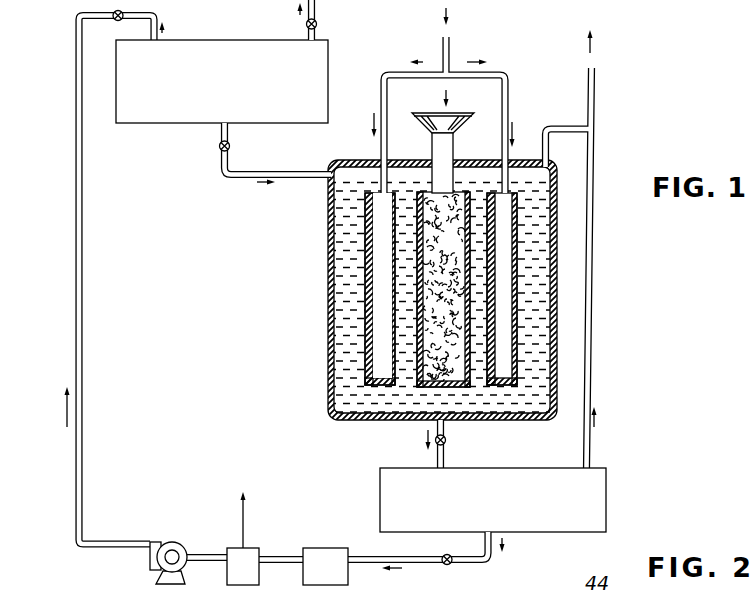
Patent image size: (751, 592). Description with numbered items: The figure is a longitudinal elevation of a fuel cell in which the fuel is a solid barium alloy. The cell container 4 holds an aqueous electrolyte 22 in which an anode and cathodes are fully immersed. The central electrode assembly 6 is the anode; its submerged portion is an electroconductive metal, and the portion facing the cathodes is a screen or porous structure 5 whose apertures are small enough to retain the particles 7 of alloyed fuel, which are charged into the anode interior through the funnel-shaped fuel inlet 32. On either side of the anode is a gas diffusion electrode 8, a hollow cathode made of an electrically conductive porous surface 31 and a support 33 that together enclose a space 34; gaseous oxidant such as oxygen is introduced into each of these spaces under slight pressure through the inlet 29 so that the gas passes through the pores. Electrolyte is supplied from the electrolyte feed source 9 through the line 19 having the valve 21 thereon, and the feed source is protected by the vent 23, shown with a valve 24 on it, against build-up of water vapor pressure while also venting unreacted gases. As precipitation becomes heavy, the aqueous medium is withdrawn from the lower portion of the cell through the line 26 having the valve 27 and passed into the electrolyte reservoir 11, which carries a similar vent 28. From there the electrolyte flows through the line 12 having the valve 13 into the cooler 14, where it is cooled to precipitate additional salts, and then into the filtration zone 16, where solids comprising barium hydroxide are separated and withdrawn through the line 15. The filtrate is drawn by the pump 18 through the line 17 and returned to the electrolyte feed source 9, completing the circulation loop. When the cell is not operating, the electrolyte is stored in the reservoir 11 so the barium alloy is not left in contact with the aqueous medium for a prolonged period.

The cell container 4 is at (322, 275).
The perforated or porous structure 5 is at (407, 228).
The electrode assembly 6 is at (455, 388).
The particles 7 is at (437, 274).
The gas diffusion electrode 8 is at (520, 262).
The electrolyte feed source 9 is at (217, 45).
The electrolyte reservoir 11 is at (606, 491).
The line 12 is at (283, 563).
The valve 13 is at (443, 554).
The cooler 14 is at (331, 553).
The line 15 is at (246, 521).
The filtration zone 16 is at (227, 577).
The line 17 is at (77, 276).
The pump 18 is at (156, 562).
The line 19 is at (264, 170).
The valve 21 is at (219, 147).
The electrolyte 22 is at (350, 228).
The vent 23 is at (307, 34).
The valve 24 is at (317, 22).
The line 26 is at (446, 461).
The valve 27 is at (447, 441).
The vent 28 is at (596, 273).
The inlet 29 is at (450, 39).
The electrically conductive porous surface 31 is at (398, 350).
The fuel inlet 32 is at (455, 116).
The support 33 is at (365, 328).
The space 34 is at (381, 285).